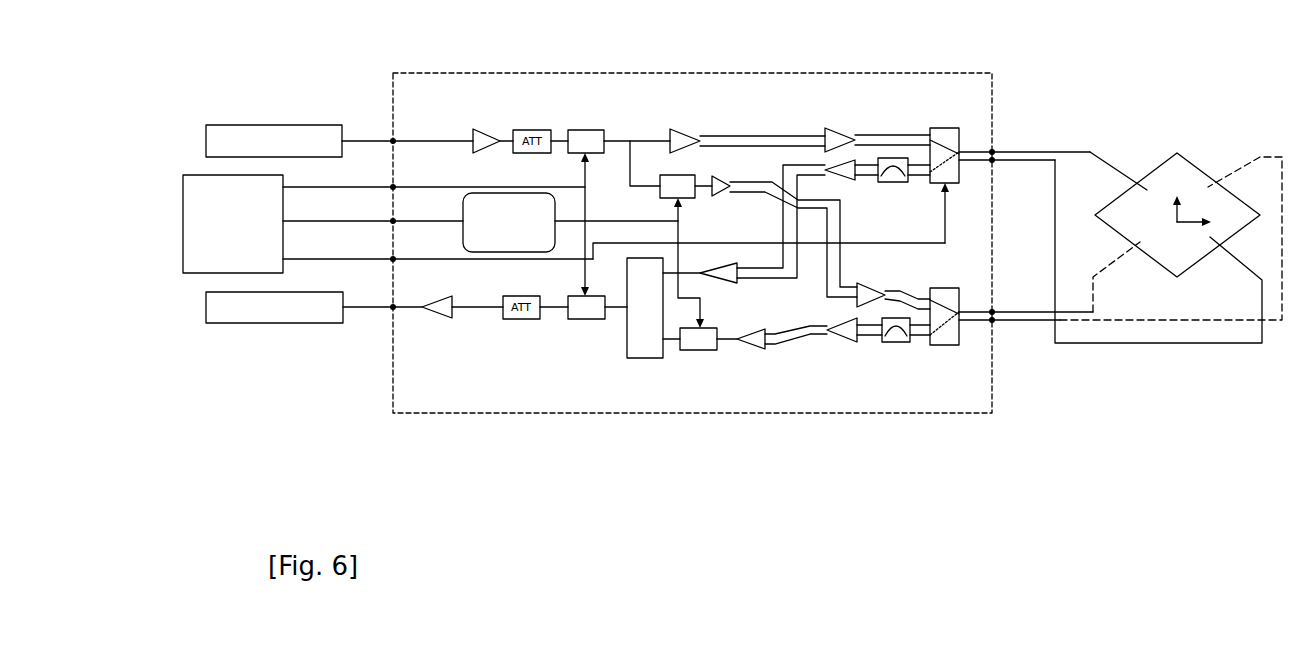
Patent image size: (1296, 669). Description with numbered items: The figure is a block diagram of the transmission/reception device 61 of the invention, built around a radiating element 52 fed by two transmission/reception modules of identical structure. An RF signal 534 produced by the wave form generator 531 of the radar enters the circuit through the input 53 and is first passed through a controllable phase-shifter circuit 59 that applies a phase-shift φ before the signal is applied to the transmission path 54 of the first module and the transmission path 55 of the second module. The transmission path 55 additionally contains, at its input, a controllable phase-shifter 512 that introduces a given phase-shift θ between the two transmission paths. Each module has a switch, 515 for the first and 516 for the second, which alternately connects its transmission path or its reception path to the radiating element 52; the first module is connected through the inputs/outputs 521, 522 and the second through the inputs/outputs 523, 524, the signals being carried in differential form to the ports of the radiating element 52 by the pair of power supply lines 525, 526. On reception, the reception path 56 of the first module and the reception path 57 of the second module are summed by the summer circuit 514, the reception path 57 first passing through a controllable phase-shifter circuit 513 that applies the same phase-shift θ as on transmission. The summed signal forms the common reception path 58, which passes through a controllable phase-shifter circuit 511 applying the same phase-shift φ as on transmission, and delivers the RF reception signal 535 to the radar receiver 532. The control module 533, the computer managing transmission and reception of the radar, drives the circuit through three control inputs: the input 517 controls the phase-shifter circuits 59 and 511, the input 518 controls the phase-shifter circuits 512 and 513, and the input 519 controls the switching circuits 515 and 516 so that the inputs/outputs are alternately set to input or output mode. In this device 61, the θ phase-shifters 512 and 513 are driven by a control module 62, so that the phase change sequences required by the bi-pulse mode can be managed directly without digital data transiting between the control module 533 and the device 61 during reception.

The radiating element 52 is at (1177, 190).
The input 53 is at (469, 121).
The transmission path 54 is at (734, 125).
The transmission path 55 is at (671, 169).
The reception path 56 is at (700, 291).
The reception path 57 is at (741, 364).
The common reception path 58 is at (436, 330).
The controllable phase-shifter circuit 59 is at (619, 118).
The transmission-reception device 61 is at (692, 219).
The control module 62 is at (570, 242).
The controllable phase-shifter circuit 511 is at (572, 332).
The controllable phase-shifter 512 is at (777, 236).
The controllable phase-shifter circuit 513 is at (689, 357).
The summer circuit 514 is at (628, 331).
The switch 515 is at (940, 165).
The switch 516 is at (937, 337).
The input 517 is at (434, 172).
The input 518 is at (381, 190).
The input 519 is at (614, 262).
The input/output 521 is at (1024, 124).
The input/output 522 is at (1007, 180).
The input/output 523 is at (1026, 287).
The input/output 524 is at (1009, 348).
The power supply line 525 is at (1152, 228).
The power supply line 526 is at (1171, 262).
The wave form generator 531 is at (274, 115).
The radar receiver 532 is at (274, 336).
The control module 533 is at (219, 244).
The RF signal 534 is at (401, 120).
The RF reception signal 535 is at (379, 288).